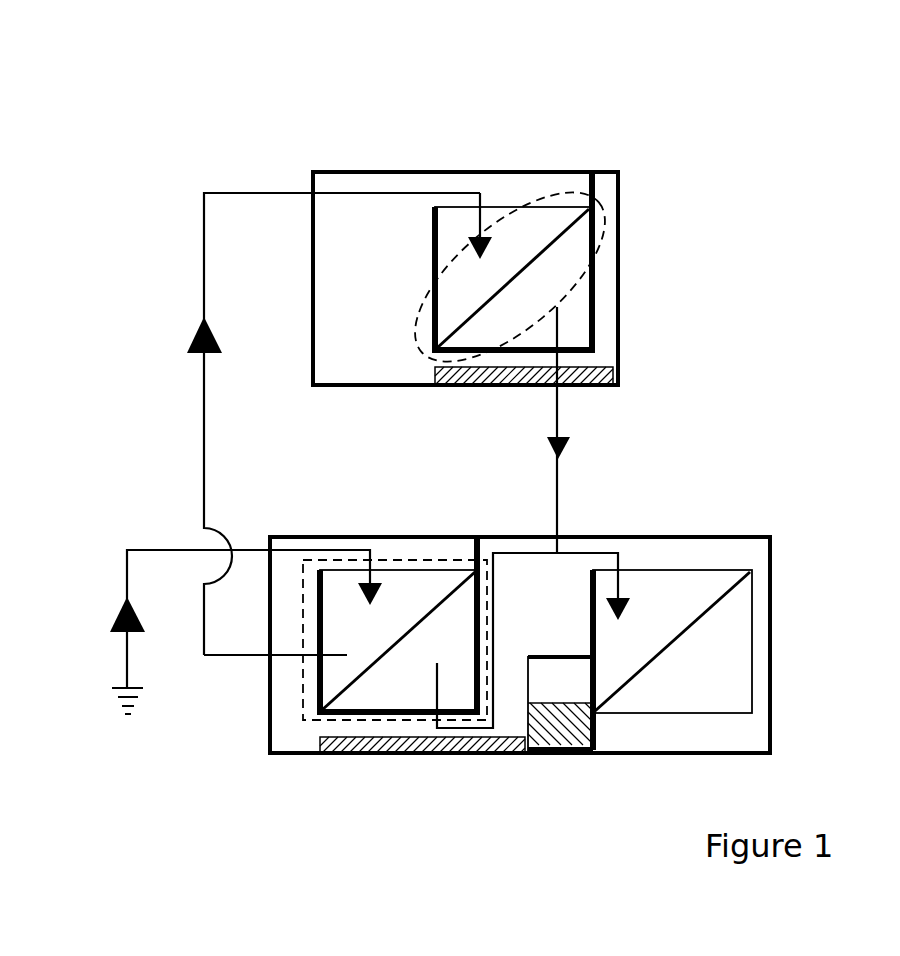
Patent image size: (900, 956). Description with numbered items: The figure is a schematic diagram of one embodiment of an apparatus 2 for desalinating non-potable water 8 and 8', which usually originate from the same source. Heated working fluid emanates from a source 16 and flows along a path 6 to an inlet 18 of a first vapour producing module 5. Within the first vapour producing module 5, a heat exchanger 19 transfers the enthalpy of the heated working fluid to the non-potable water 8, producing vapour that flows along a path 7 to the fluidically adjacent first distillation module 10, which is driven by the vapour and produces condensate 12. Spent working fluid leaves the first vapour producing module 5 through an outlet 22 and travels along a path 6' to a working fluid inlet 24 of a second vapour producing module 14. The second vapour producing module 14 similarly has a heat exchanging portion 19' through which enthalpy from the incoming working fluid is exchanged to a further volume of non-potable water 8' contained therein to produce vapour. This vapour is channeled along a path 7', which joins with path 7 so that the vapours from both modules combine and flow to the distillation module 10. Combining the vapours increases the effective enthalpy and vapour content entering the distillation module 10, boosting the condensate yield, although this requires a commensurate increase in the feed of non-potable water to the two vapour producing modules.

The apparatus 2 is at (754, 280).
The first vapour producing module 5 is at (352, 764).
The path 6 is at (235, 565).
The path 6' is at (339, 371).
The path 7 is at (533, 600).
The path 7' is at (607, 430).
The non-potable water 8 is at (422, 779).
The non-potable water 8' is at (553, 404).
The first distillation module 10 is at (702, 585).
The condensate 12 is at (585, 750).
The second vapour producing module 14 is at (662, 215).
The source 16 is at (122, 697).
The inlet 18 is at (373, 568).
The heat exchanger 19 is at (338, 674).
The heat exchanging portion 19' is at (515, 219).
The outlet 22 is at (308, 654).
The working fluid inlet 24 is at (481, 206).